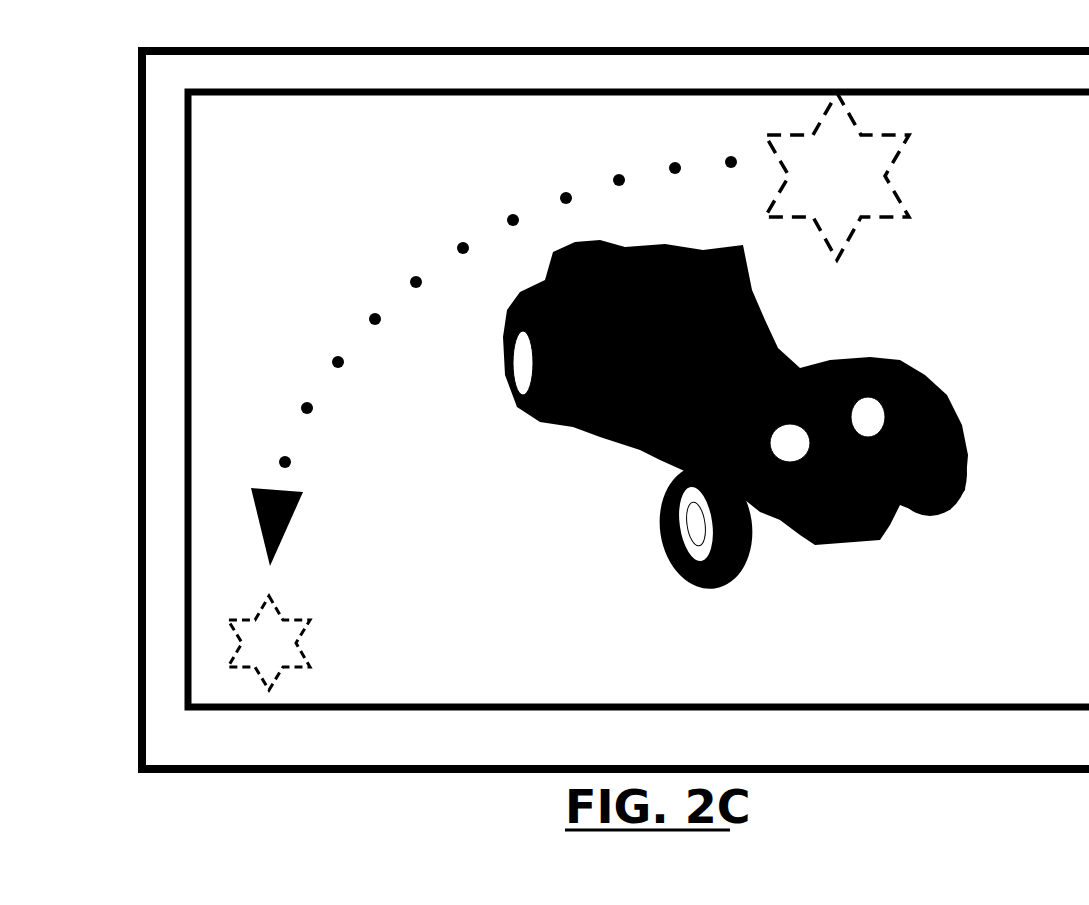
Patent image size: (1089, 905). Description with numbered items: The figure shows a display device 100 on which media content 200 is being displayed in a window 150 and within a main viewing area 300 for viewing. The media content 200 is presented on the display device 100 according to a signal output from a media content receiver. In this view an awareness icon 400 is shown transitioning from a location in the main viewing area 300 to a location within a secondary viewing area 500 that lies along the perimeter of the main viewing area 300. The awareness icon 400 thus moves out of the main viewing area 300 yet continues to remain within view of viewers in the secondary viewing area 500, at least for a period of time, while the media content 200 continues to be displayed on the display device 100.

The display device 100 is at (213, 762).
The window 150 is at (222, 480).
The media content 200 is at (518, 644).
The main viewing area 300 is at (895, 632).
The awareness icon 400 is at (900, 207).
The secondary viewing area 500 is at (460, 502).